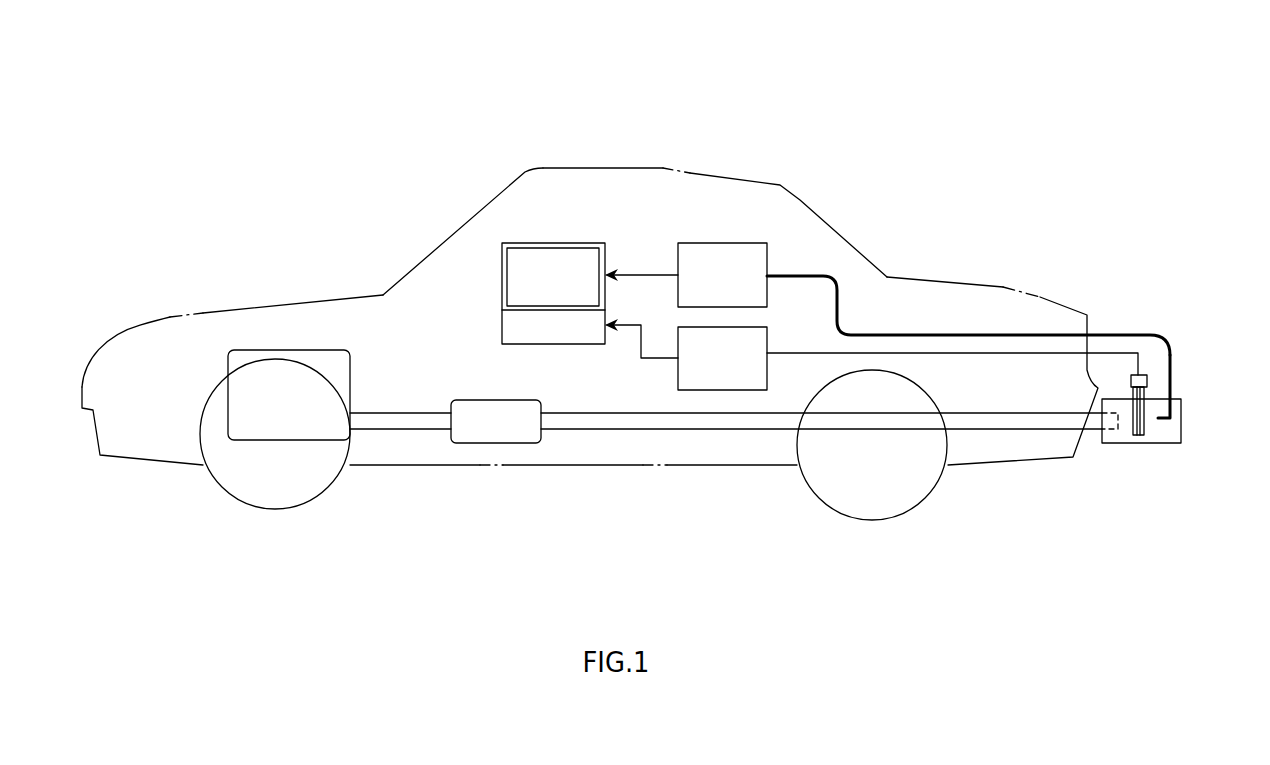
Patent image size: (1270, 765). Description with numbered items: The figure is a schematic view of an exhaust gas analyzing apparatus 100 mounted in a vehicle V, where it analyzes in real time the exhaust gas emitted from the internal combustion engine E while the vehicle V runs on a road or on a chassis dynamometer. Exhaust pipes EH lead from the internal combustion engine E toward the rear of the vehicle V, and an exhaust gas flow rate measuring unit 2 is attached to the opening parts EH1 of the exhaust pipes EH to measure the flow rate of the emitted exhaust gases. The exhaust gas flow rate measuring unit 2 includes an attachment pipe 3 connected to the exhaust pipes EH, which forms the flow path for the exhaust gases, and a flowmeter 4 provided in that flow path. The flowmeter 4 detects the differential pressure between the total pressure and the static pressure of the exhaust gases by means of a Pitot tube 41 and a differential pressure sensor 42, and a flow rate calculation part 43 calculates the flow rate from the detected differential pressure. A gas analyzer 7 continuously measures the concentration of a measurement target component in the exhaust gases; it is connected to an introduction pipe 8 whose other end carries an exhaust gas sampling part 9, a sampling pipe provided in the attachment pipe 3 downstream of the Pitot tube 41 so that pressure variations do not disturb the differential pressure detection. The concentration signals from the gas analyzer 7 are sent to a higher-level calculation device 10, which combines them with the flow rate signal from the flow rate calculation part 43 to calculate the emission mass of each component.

The exhaust gas analyzing apparatus 100 is at (900, 155).
The vehicle V is at (557, 168).
The internal combustion engine E is at (228, 360).
The exhaust pipes EH is at (1008, 430).
The opening parts EH1 is at (1112, 437).
The calculation device 10 is at (502, 325).
The gas analyzer 7 is at (722, 243).
The flow rate calculation part 43 is at (678, 375).
The introduction pipe 8 is at (963, 335).
The exhaust gas flow rate measuring unit 2 is at (1137, 452).
The attachment pipe 3 is at (1183, 425).
The flowmeter 4 is at (1139, 332).
The Pitot tube 41 is at (1145, 425).
The differential pressure sensor 42 is at (1148, 381).
The exhaust gas sampling part 9 is at (1172, 412).